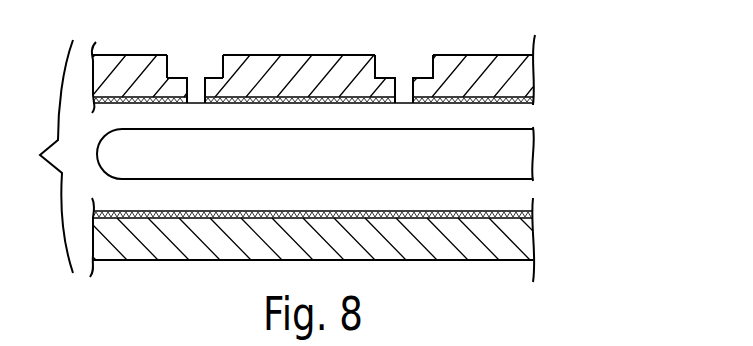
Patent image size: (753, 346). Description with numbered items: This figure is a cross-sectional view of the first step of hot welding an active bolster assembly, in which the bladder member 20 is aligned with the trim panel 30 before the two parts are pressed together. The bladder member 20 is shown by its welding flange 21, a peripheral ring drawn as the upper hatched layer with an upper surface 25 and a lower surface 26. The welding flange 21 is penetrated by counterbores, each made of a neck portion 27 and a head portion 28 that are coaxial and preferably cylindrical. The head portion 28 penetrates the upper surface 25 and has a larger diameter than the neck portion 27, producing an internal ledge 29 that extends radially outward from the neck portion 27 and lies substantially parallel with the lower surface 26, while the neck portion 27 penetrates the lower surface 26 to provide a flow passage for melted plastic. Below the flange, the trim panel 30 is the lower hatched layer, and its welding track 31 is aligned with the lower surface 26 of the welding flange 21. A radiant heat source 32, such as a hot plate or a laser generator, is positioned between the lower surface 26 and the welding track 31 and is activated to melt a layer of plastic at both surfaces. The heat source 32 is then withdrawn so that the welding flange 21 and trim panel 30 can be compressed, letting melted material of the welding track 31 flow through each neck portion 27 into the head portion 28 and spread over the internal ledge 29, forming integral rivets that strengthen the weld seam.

The bladder member 20 is at (485, 45).
The welding flange 21 is at (497, 77).
The upper surface 25 is at (303, 55).
The lower surface 26 is at (494, 104).
The neck portion 27 is at (193, 80).
The head portion 28 is at (175, 55).
The internal ledge 29 is at (218, 55).
The trim panel 30 is at (473, 263).
The welding track 31 is at (497, 211).
The radiant heat source 32 is at (502, 155).